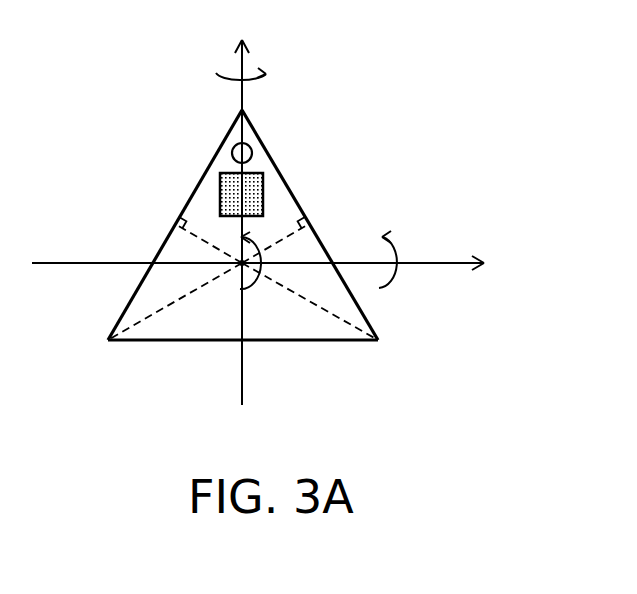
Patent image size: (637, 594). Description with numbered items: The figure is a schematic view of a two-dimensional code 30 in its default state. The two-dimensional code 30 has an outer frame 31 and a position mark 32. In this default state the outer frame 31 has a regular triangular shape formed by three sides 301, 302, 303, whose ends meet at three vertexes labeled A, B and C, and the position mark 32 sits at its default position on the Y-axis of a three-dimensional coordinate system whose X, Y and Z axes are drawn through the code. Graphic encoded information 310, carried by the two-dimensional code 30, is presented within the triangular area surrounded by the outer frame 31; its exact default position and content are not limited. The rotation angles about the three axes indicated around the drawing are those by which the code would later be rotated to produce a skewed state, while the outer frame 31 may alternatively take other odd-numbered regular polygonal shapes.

The two-dimensional code 30 is at (493, 428).
The outer frame 31 is at (284, 266).
The position mark 32 is at (251, 147).
The side 301 is at (213, 160).
The side 302 is at (364, 318).
The side 303 is at (164, 342).
The graphic encoded information 310 is at (220, 193).